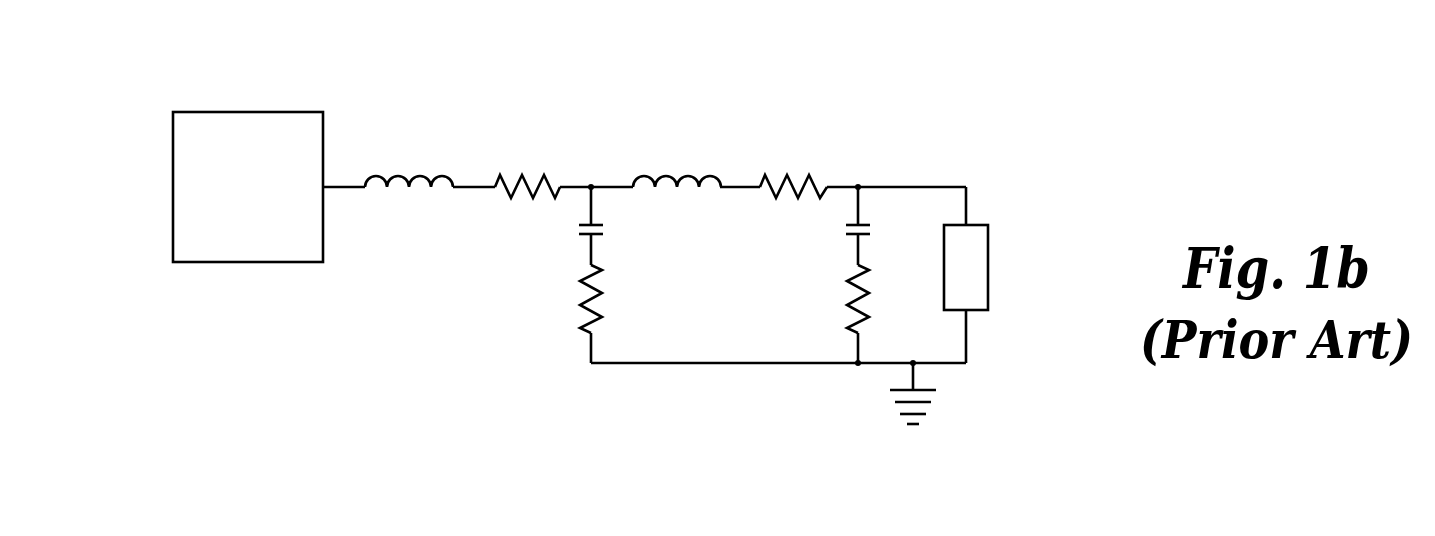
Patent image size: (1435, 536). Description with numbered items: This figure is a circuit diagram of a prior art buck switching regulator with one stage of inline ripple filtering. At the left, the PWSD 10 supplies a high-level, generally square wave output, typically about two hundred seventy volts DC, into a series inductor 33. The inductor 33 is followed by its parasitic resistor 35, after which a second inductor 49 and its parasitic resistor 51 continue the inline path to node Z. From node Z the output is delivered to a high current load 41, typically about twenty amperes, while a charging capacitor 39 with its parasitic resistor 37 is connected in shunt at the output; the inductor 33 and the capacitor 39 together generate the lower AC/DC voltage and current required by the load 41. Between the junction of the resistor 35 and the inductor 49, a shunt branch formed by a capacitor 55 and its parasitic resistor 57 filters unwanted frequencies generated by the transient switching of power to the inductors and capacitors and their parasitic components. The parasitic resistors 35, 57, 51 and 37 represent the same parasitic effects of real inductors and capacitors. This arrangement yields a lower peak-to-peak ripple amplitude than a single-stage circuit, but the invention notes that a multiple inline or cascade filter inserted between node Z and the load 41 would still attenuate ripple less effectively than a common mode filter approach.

The PWSD 10 is at (173, 186).
The series inductor 33 is at (411, 172).
The parasitic resistor 35 is at (525, 173).
The inductor 49 is at (670, 172).
The parasitic resistor 51 is at (792, 173).
The node Z is at (858, 187).
The high current load 41 is at (988, 262).
The capacitor 55 is at (578, 225).
The parasitic resistor 57 is at (586, 304).
The charging capacitor 39 is at (846, 225).
The parasitic resistor 37 is at (853, 304).